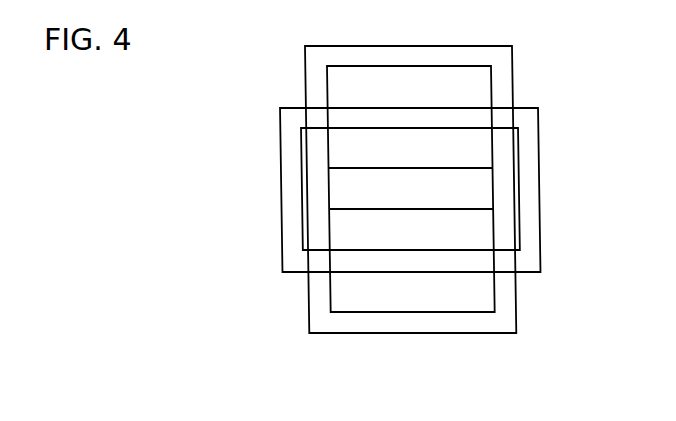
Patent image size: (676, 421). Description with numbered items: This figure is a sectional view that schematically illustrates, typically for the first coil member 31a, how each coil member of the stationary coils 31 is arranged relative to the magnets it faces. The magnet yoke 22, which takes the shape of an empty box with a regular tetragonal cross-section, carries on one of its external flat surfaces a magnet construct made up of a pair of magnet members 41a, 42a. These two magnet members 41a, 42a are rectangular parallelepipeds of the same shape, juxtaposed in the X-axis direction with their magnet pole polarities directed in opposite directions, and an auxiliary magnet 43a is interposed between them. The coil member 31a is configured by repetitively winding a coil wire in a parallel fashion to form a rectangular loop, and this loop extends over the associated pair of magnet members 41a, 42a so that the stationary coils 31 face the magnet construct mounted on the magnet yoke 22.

The magnet yoke 22 is at (430, 324).
The stationary coils 31 is at (272, 134).
The first coil member 31a is at (532, 173).
The magnet member 41a is at (416, 80).
The magnet member 42a is at (470, 293).
The auxiliary magnet 43a is at (347, 188).